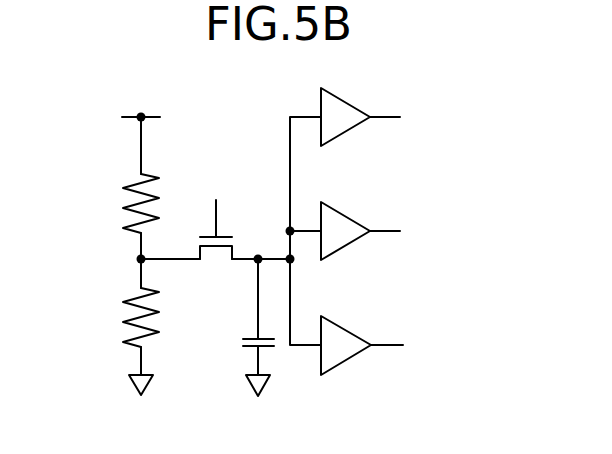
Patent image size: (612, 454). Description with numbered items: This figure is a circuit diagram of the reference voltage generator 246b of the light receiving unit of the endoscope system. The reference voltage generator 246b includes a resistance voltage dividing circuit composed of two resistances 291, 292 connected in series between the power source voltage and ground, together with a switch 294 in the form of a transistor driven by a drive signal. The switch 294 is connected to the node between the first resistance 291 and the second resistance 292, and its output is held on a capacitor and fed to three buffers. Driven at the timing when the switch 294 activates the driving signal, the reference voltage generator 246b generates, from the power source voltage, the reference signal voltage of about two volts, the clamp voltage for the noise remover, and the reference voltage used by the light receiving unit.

The reference voltage generator 246b is at (265, 257).
The resistance 291 is at (131, 216).
The resistance 292 is at (131, 329).
The switch (transistor) 294 is at (216, 249).